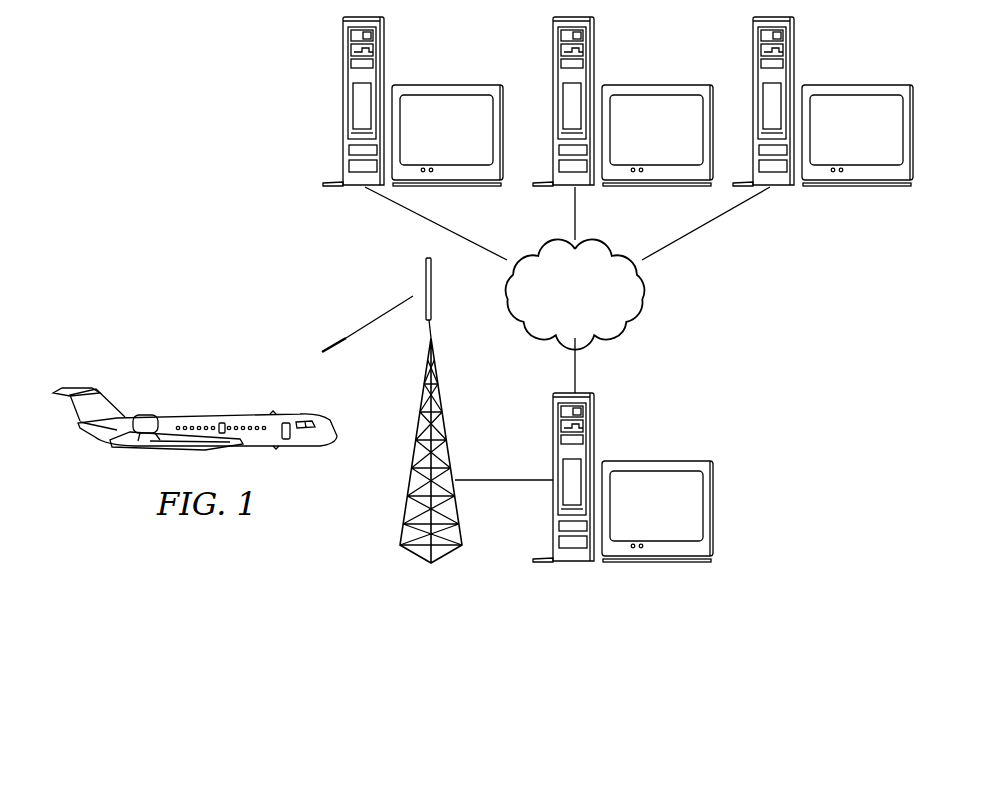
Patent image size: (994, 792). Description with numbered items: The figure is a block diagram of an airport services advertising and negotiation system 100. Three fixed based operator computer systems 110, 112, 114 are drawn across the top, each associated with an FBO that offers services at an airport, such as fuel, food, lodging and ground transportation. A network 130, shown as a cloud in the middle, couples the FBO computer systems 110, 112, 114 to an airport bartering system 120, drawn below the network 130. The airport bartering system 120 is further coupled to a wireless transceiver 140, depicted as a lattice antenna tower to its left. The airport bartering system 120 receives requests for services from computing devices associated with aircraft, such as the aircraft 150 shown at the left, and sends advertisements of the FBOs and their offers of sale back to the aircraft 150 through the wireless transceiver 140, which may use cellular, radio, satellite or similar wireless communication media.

The system 100 is at (227, 182).
The fixed based operator computer system 110 is at (447, 84).
The fixed based operator computer system 112 is at (657, 84).
The fixed based operator computer system 114 is at (857, 84).
The airport bartering system 120 is at (714, 506).
The network 130 is at (556, 324).
The wireless transceiver 140 is at (420, 560).
The aircraft 150 is at (187, 414).